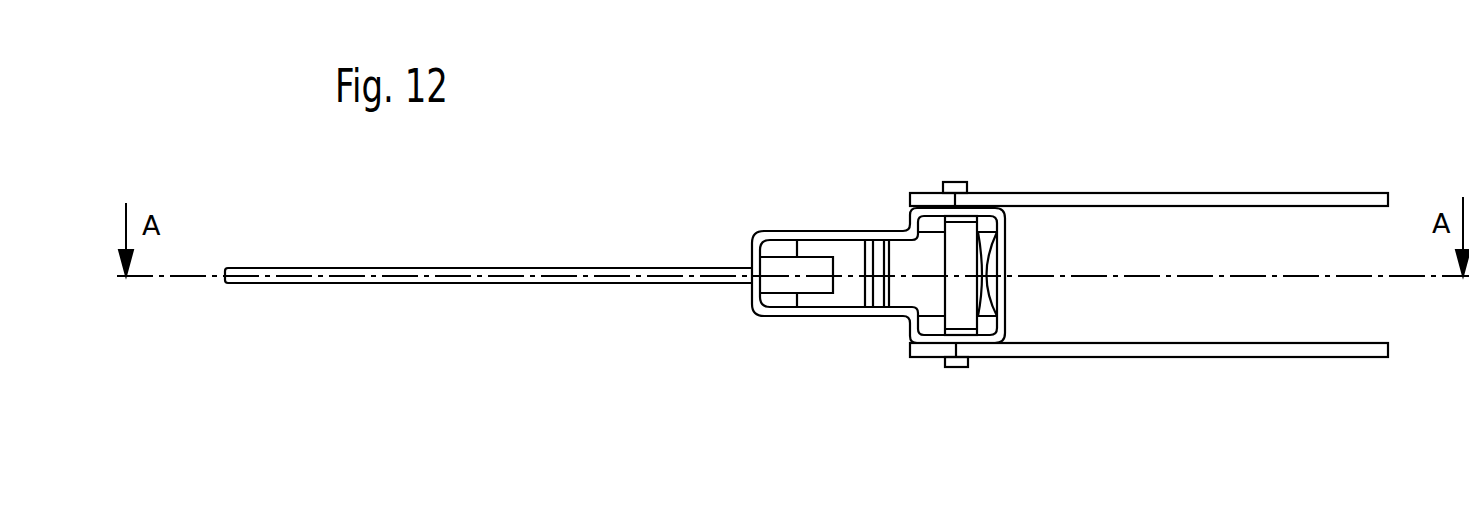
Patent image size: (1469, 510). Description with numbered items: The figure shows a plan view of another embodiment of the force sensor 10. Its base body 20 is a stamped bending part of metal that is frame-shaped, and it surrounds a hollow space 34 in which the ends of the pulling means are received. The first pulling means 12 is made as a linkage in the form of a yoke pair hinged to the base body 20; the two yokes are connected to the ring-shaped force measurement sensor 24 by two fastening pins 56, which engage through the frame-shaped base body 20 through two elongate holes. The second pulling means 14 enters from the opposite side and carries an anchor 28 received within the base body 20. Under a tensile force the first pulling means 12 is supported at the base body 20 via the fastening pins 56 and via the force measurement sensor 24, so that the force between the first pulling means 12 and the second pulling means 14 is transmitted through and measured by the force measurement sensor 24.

The force sensor 10 is at (805, 189).
The first pulling means 12 is at (1186, 197).
The second pulling means 14 is at (530, 268).
The base body 20 is at (823, 313).
The force measurement sensor 24 is at (950, 288).
The anchor 28 is at (784, 287).
The hollow space 34 is at (852, 240).
The fastening pins 56 is at (955, 182).